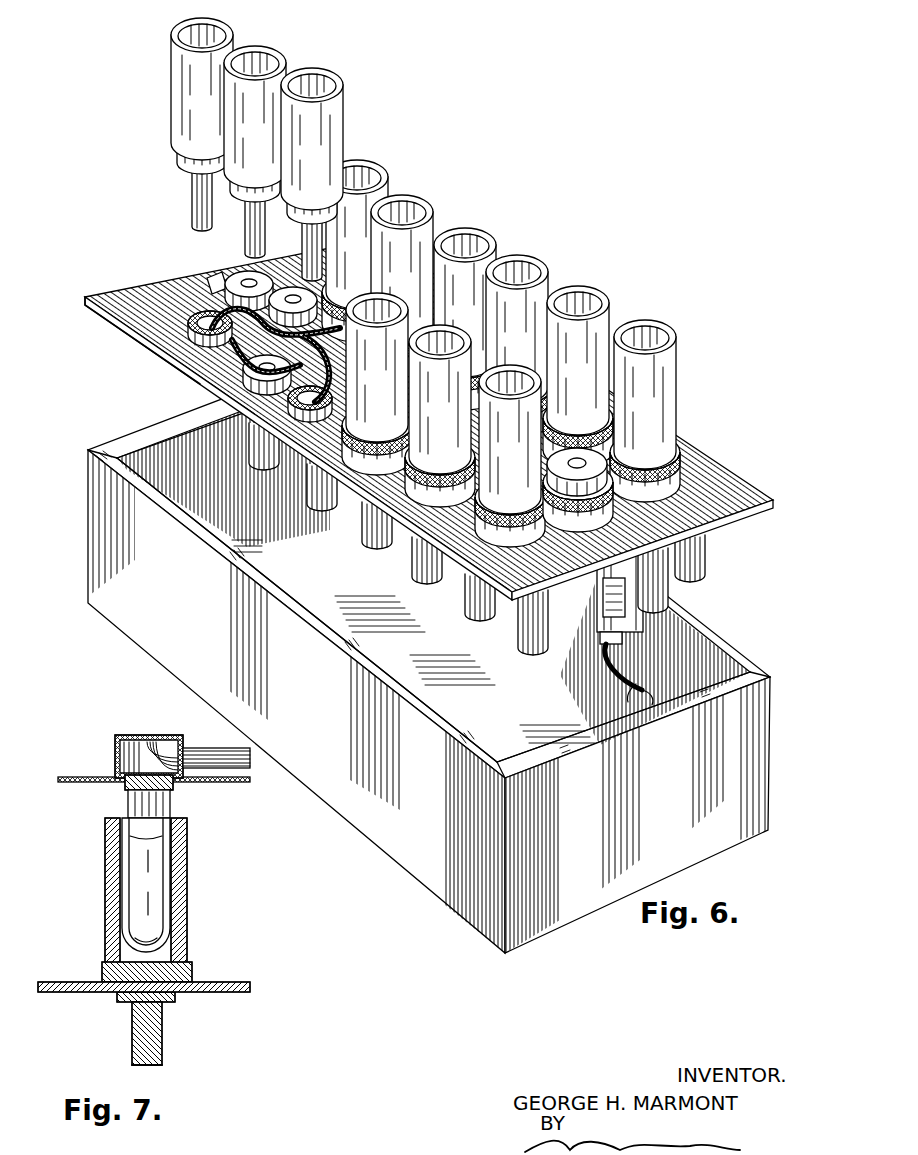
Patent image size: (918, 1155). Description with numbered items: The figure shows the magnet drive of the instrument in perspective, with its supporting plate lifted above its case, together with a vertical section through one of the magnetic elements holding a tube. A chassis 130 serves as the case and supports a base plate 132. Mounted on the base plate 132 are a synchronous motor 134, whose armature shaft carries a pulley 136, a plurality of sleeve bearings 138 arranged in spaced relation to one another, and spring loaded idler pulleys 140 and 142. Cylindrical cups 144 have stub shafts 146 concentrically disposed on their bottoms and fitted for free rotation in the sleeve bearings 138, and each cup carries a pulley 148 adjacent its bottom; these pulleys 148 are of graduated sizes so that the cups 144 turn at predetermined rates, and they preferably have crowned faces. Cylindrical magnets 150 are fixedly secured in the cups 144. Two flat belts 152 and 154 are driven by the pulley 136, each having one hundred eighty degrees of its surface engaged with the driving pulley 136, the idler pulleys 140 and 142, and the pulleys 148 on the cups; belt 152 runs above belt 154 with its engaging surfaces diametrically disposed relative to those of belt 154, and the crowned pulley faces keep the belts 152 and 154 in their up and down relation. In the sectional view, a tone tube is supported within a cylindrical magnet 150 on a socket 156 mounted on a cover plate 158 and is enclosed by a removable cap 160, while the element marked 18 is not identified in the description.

In FIG. 7, the liquid sample 18 is at (156, 900).
In FIG. 6, the chassis 130 is at (428, 858).
In FIG. 6, the base plate 132 is at (742, 494).
In FIG. 7, the base plate 132 is at (238, 992).
In FIG. 6, the motor 134 is at (644, 604).
In FIG. 6, the pulley 136 is at (622, 487).
In FIG. 6, the sleeve bearings 138 is at (368, 537).
In FIG. 7, the sleeve bearings 138 is at (163, 1062).
In FIG. 6, the spring loaded idler pulley 140 is at (247, 284).
In FIG. 6, the spring loaded idler pulley 142 is at (292, 300).
In FIG. 6, the cylindrical cups 144 is at (190, 98).
In FIG. 7, the cylindrical cups 144 is at (108, 878).
In FIG. 6, the stub shafts 146 is at (190, 188).
In FIG. 7, the stub shafts 146 is at (140, 1018).
In FIG. 6, the pulleys 148 is at (352, 440).
In FIG. 7, the pulleys 148 is at (193, 972).
In FIG. 7, the cylindrical magnets 150 is at (178, 876).
In FIG. 6, the flat belt 152 is at (147, 337).
In FIG. 6, the flat belt 154 is at (205, 368).
In FIG. 7, the sockets 156 is at (126, 785).
In FIG. 7, the cover plate 158 is at (242, 783).
In FIG. 7, the removable caps 160 is at (115, 745).